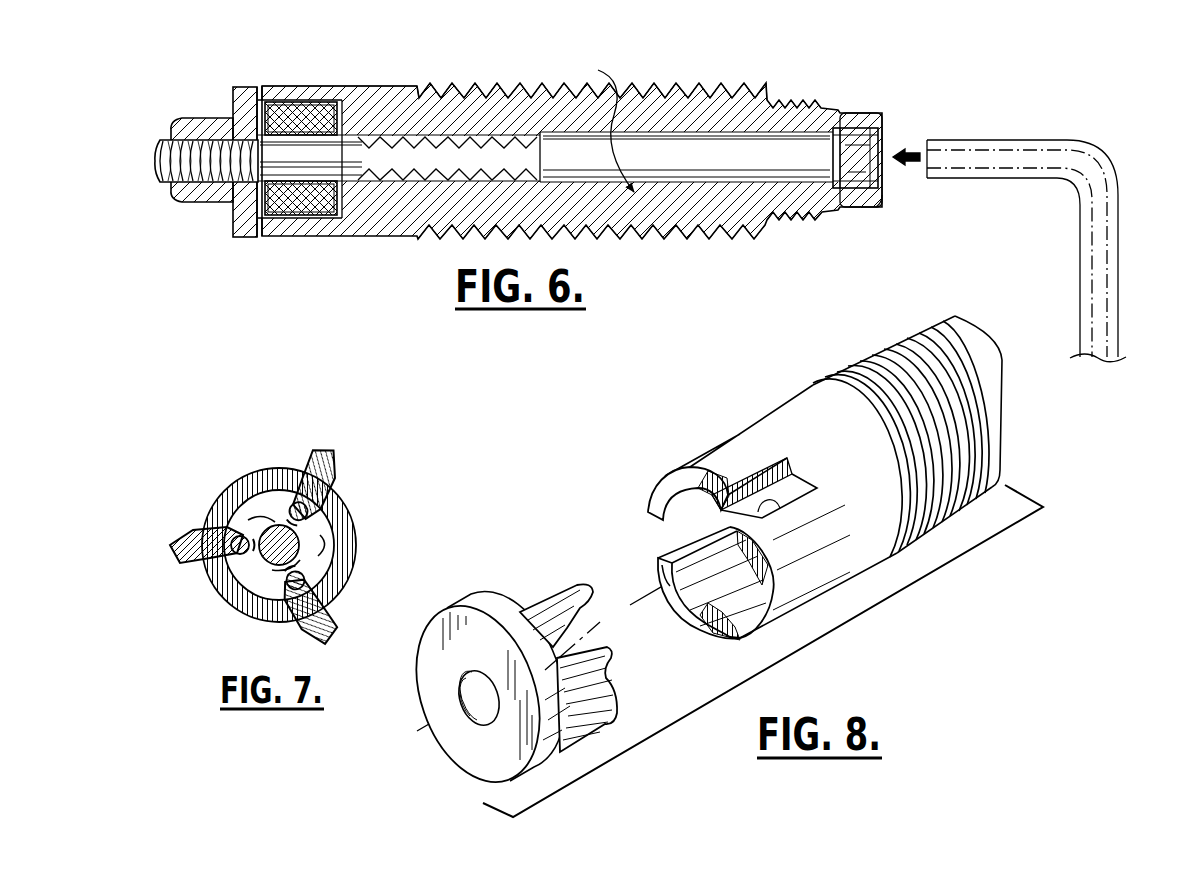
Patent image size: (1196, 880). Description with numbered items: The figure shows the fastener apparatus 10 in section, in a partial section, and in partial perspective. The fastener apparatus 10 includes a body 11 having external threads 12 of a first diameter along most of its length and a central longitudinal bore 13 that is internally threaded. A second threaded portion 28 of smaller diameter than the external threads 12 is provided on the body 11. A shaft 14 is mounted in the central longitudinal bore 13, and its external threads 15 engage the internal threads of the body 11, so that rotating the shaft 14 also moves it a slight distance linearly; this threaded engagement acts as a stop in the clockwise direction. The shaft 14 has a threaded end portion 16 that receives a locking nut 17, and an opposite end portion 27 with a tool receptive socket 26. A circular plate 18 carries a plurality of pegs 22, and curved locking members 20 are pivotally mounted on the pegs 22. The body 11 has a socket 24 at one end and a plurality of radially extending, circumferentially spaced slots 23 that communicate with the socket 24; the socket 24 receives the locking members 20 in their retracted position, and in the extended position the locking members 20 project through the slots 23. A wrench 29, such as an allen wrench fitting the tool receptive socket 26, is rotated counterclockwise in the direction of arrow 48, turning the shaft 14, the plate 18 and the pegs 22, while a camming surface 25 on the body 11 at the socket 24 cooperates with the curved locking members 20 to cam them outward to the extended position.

In FIG. 6, the fastener apparatus 10 is at (656, 60).
In FIG. 6, the body 11 is at (405, 86).
In FIG. 8, the body 11 is at (858, 463).
In FIG. 6, the external threads 12 is at (690, 92).
In FIG. 8, the external threads 12 is at (886, 356).
In FIG. 6, the central longitudinal bore 13 is at (705, 128).
In FIG. 6, the shaft 14 is at (842, 113).
In FIG. 7, the shaft 14 is at (300, 545).
In FIG. 6, the external threads 15 is at (386, 236).
In FIG. 6, the threaded end portion 16 is at (158, 165).
In FIG. 6, the locking nut 17 is at (207, 118).
In FIG. 6, the circular plate 18 is at (241, 238).
In FIG. 8, the circular plate 18 is at (487, 752).
In FIG. 7, the locking members 20 is at (332, 448).
In FIG. 8, the locking members 20 is at (562, 590).
In FIG. 7, the pegs 22 is at (240, 540).
In FIG. 8, the slots 23 is at (781, 474).
In FIG. 6, the socket 24 is at (305, 102).
In FIG. 7, the socket 24 is at (250, 518).
In FIG. 8, the socket 24 is at (676, 598).
In FIG. 7, the camming surface 25 is at (283, 468).
In FIG. 6, the tool receptive socket 26 is at (895, 132).
In FIG. 6, the end portion 27 is at (884, 196).
In FIG. 6, the second threaded portion 28 is at (800, 100).
In FIG. 6, the wrench 29 is at (1105, 190).
In FIG. 6, the arrow 48 is at (601, 121).